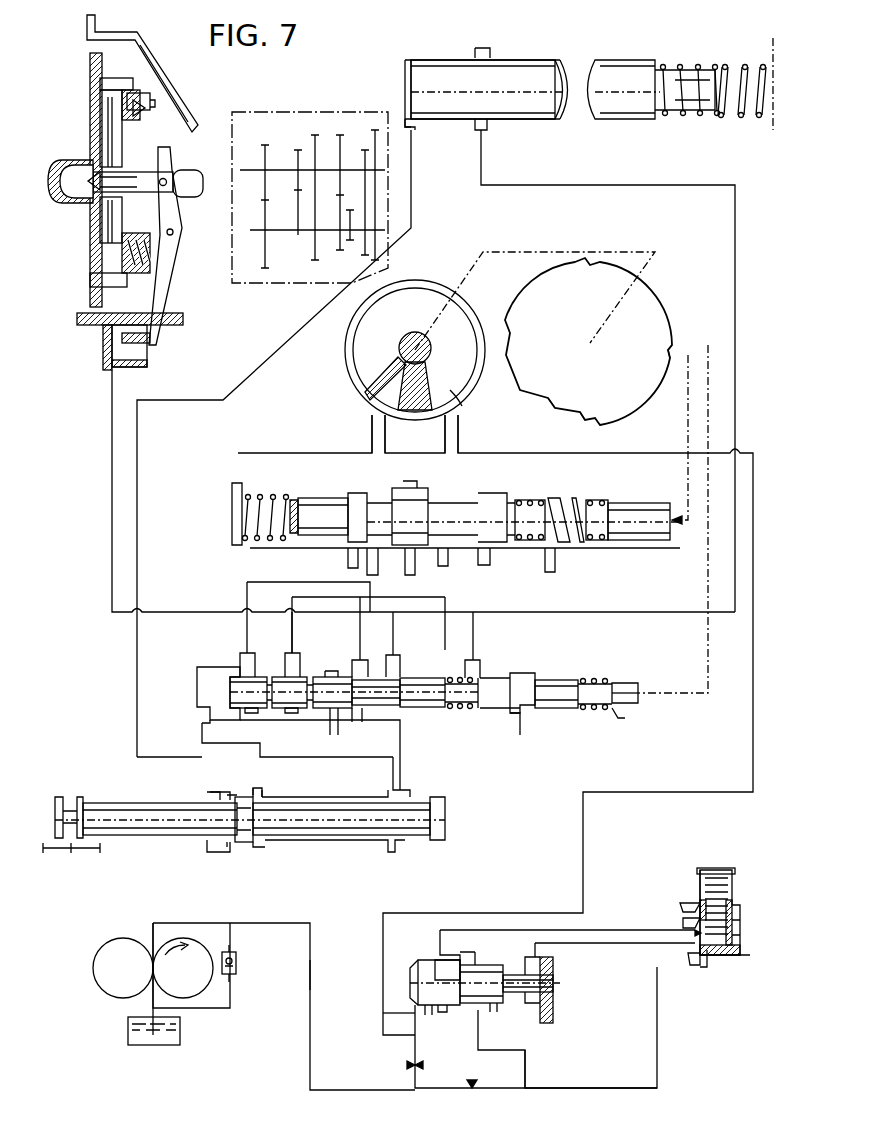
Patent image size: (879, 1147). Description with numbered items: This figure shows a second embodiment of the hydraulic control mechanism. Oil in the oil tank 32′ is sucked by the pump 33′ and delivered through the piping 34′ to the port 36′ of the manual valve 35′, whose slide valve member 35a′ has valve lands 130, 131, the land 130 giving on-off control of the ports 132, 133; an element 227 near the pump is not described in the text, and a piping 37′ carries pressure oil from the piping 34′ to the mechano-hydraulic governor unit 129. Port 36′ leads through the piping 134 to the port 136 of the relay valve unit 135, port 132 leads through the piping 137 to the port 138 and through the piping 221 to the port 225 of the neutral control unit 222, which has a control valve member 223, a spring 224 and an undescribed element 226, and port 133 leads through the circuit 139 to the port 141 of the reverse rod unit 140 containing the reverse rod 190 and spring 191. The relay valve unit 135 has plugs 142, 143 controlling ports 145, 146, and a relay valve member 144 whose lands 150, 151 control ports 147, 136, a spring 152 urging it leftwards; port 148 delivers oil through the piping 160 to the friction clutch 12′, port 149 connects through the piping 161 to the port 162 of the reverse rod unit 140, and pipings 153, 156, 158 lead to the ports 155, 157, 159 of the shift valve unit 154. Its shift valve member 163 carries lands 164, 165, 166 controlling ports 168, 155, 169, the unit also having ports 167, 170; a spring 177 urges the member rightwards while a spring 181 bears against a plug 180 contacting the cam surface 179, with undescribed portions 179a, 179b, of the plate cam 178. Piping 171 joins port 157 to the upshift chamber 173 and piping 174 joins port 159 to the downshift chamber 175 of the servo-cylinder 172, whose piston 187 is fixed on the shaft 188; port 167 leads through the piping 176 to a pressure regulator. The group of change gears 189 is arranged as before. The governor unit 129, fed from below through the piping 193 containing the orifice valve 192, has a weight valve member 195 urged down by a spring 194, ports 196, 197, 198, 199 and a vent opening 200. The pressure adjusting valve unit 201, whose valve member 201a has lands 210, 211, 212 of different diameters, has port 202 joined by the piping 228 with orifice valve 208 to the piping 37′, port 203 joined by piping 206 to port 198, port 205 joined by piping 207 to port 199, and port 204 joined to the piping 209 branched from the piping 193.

The friction clutch 12′ is at (86, 282).
The group of change gears 189 is at (315, 97).
The reverse rod unit 140 is at (580, 49).
The reverse rod 190 is at (453, 65).
The port 141 is at (414, 130).
The port 162 is at (483, 130).
The spring 191 is at (735, 110).
The piping 161 is at (738, 355).
The piping 160 is at (112, 488).
The piping 176 is at (753, 470).
The circuit 139 is at (135, 650).
The servo-cylinder 172 is at (472, 318).
The shaft 188 is at (408, 340).
The upshift chamber 173 is at (378, 395).
The piston 187 is at (365, 370).
The downshift chamber 175 is at (455, 392).
The piping 171 is at (375, 440).
The piping 174 is at (452, 440).
The plate cam 178 is at (655, 315).
The cam surface 179 is at (672, 390).
The cam notch 179a is at (575, 420).
The cam notch 179b is at (555, 410).
The port 167 is at (228, 490).
The spring 177 is at (232, 530).
The land 164 is at (318, 500).
The land 165 is at (405, 494).
The shift valve member 163 is at (465, 503).
The land 166 is at (510, 500).
The spring 181 is at (562, 498).
The port 170 is at (562, 548).
The plug 180 is at (630, 540).
The port 168 is at (345, 548).
The port 157 is at (375, 566).
The port 155 is at (410, 565).
The port 159 is at (450, 560).
The port 169 is at (505, 548).
The shift valve unit 154 is at (510, 548).
The piping 156 is at (282, 585).
The piping 158 is at (350, 618).
The piping 153 is at (393, 630).
The port 145 is at (242, 665).
The port 146 is at (292, 670).
The port 148 is at (360, 670).
The land 151 is at (422, 680).
The port 149 is at (480, 665).
The port 138 is at (200, 690).
The plug 142 is at (250, 708).
The plug 143 is at (295, 708).
The relay valve member 144 is at (370, 708).
The port 136 is at (393, 712).
The spring 152 is at (465, 710).
The land 150 is at (325, 725).
The port 147 is at (355, 725).
The piping 134 is at (395, 745).
The piping 137 is at (202, 735).
The relay valve unit 135 is at (497, 685).
The control valve member 223 is at (565, 703).
The neutral control valve unit 222 is at (655, 659).
The spring 224 is at (612, 712).
The stop 226 is at (620, 718).
The port 225 is at (520, 735).
The manual valve 35′ is at (285, 843).
The valve land 130 is at (242, 842).
The valve land 131 is at (430, 842).
The port 36′ is at (395, 848).
The port 133 is at (218, 792).
The port 132 is at (263, 785).
The piping 221 is at (318, 770).
The slide valve member 35a′ is at (405, 810).
The pump 33′ is at (110, 940).
The oil tank 32′ is at (178, 1033).
The piping 34′ is at (275, 923).
The valve 227 is at (283, 967).
The piping 37′ is at (310, 972).
The pressure adjusting valve unit 201 is at (503, 940).
The valve member 201a is at (470, 957).
The port 203 is at (433, 952).
The land 212 is at (555, 985).
The port 205 is at (553, 960).
The land 211 is at (490, 1000).
The land 210 is at (428, 1008).
The port 202 is at (400, 1010).
The port 204 is at (478, 1030).
The piping 209 is at (530, 1068).
The piping 206 is at (600, 928).
The piping 207 is at (630, 945).
The piping 228 is at (412, 1060).
The orifice valve 208 is at (412, 1070).
The orifice valve 192 is at (476, 1100).
The piping 193 is at (585, 1090).
The mechano-hydraulic governor unit 129 is at (745, 836).
The spring 194 is at (722, 880).
The weight valve member 195 is at (695, 895).
The port 196 is at (690, 900).
The port 197 is at (690, 908).
The port 198 is at (690, 925).
The port 199 is at (692, 965).
The vent opening 200 is at (708, 960).